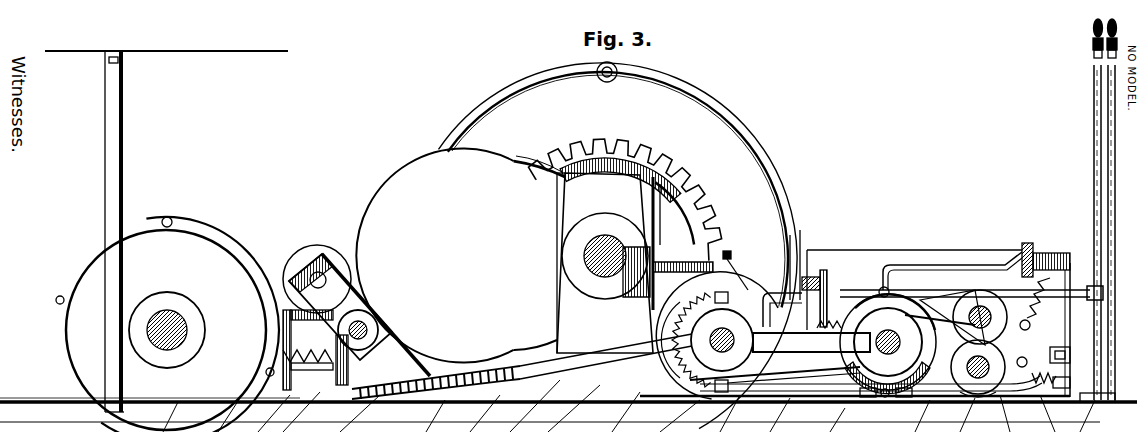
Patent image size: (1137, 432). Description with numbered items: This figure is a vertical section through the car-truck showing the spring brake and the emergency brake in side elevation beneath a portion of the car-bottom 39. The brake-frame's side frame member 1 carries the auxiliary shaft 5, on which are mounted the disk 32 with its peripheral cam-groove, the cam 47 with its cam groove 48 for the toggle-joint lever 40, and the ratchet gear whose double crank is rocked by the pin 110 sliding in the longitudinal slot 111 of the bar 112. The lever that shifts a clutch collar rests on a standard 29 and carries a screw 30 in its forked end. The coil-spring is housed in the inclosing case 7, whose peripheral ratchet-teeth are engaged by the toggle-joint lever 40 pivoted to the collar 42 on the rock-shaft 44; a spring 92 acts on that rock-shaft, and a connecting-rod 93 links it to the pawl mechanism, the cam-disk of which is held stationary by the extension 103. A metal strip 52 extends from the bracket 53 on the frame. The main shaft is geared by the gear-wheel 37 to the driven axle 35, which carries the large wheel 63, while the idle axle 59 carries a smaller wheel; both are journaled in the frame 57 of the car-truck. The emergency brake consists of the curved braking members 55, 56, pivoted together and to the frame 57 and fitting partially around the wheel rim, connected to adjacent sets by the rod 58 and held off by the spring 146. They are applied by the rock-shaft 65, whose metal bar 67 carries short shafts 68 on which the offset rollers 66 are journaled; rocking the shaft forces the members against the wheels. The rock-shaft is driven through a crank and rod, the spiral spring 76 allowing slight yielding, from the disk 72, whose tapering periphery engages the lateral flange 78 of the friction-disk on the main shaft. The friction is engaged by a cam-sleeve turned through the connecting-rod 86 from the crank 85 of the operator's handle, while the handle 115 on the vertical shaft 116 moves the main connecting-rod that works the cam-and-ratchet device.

The car-bottom 39 is at (190, 52).
The curved braking member 55 is at (73, 268).
The curved braking member 56 is at (232, 237).
The idle axle 59 is at (175, 312).
The spring 146 is at (247, 348).
The metal bar 67 is at (312, 270).
The short shaft 68 is at (312, 277).
The offset roller 66 is at (332, 250).
The rock-shaft 65 is at (340, 335).
The rod 58 is at (362, 320).
The spiral spring 76 is at (432, 372).
The disk 72 is at (560, 308).
The lateral flange 78 is at (638, 240).
The axle 35 is at (586, 252).
The gear-wheel 37 is at (662, 166).
The wheel 63 is at (722, 177).
The side frame member 1 is at (722, 254).
The inclosing case 7 is at (732, 262).
The screw 30 is at (724, 292).
The standard 29 is at (828, 280).
The bracket 53 is at (820, 262).
The metal strip 52 is at (780, 262).
The toggle-joint lever 40 is at (805, 265).
The auxiliary shaft 5 is at (886, 330).
The frame of the car-truck 57 is at (907, 264).
The disk 32 is at (908, 284).
The cam 47 is at (922, 302).
The extension 103 is at (882, 264).
The collar 42 is at (984, 306).
The connecting-rod 93 is at (978, 356).
The connecting-rod 86 is at (1014, 288).
The crank 85 is at (1094, 288).
The rock-shaft 44 is at (1035, 246).
The spring 92 is at (1046, 308).
The cam groove 48 is at (1072, 354).
The bar 112 is at (871, 382).
The longitudinal slot 111 is at (870, 402).
The pin 110 is at (915, 409).
The vertical shaft 116 is at (1108, 130).
The handle 115 is at (1094, 30).